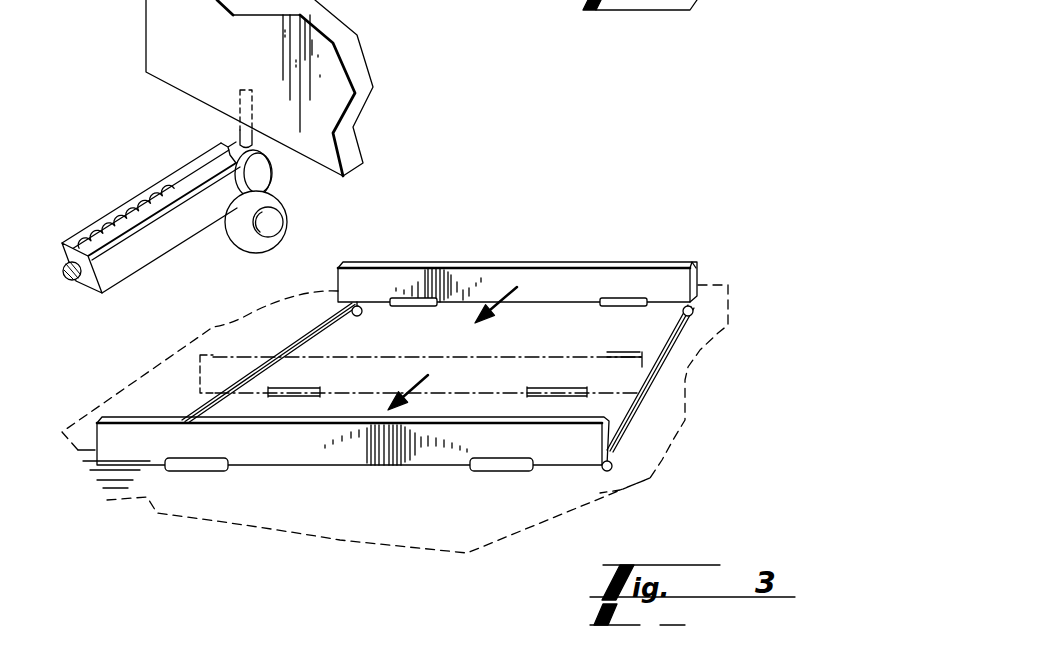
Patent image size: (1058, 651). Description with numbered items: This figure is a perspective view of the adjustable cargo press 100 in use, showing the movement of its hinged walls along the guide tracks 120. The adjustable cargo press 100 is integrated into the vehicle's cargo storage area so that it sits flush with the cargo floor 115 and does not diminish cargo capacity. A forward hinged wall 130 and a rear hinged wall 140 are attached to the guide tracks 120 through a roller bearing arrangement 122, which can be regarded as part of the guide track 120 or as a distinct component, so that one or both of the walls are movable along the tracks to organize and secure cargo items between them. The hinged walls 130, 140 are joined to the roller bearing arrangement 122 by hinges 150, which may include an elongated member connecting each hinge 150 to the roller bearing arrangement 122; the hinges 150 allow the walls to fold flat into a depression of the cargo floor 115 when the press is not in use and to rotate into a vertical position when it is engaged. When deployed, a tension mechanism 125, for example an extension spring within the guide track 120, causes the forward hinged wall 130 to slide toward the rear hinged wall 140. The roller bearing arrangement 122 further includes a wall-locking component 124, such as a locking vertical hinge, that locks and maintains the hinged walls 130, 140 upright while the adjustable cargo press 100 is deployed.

The adjustable cargo press 100 is at (422, 315).
The cargo floor 115 is at (376, 549).
The guide tracks 120 is at (93, 218).
The roller bearing arrangement 122 is at (322, 220).
The wall-locking component 124 is at (246, 137).
The tension mechanism 125 is at (146, 180).
The forward hinged wall 130 is at (213, 357).
The rear hinged wall 140 is at (307, 443).
The hinges 150 is at (173, 473).